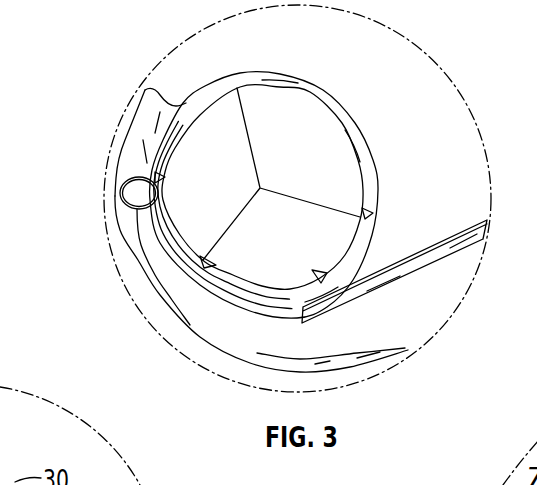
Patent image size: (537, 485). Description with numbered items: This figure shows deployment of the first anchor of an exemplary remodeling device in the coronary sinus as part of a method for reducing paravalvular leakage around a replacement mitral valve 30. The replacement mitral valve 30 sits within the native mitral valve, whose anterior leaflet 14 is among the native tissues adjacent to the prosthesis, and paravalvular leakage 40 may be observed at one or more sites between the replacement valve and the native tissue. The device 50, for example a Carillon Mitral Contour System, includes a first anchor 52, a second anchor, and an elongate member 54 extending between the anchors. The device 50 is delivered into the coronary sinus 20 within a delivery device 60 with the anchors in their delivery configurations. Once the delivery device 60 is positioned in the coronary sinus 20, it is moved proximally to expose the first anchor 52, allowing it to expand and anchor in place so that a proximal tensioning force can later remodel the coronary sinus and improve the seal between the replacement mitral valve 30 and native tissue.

The anterior leaflet 14 is at (364, 168).
The coronary sinus 20 is at (130, 136).
The replacement mitral valve 30 is at (308, 127).
The paravalvular leakage 40 is at (162, 177).
The device 50 is at (195, 308).
The first anchor 52 is at (122, 181).
The elongate member 54 is at (158, 250).
The delivery device 60 is at (410, 267).